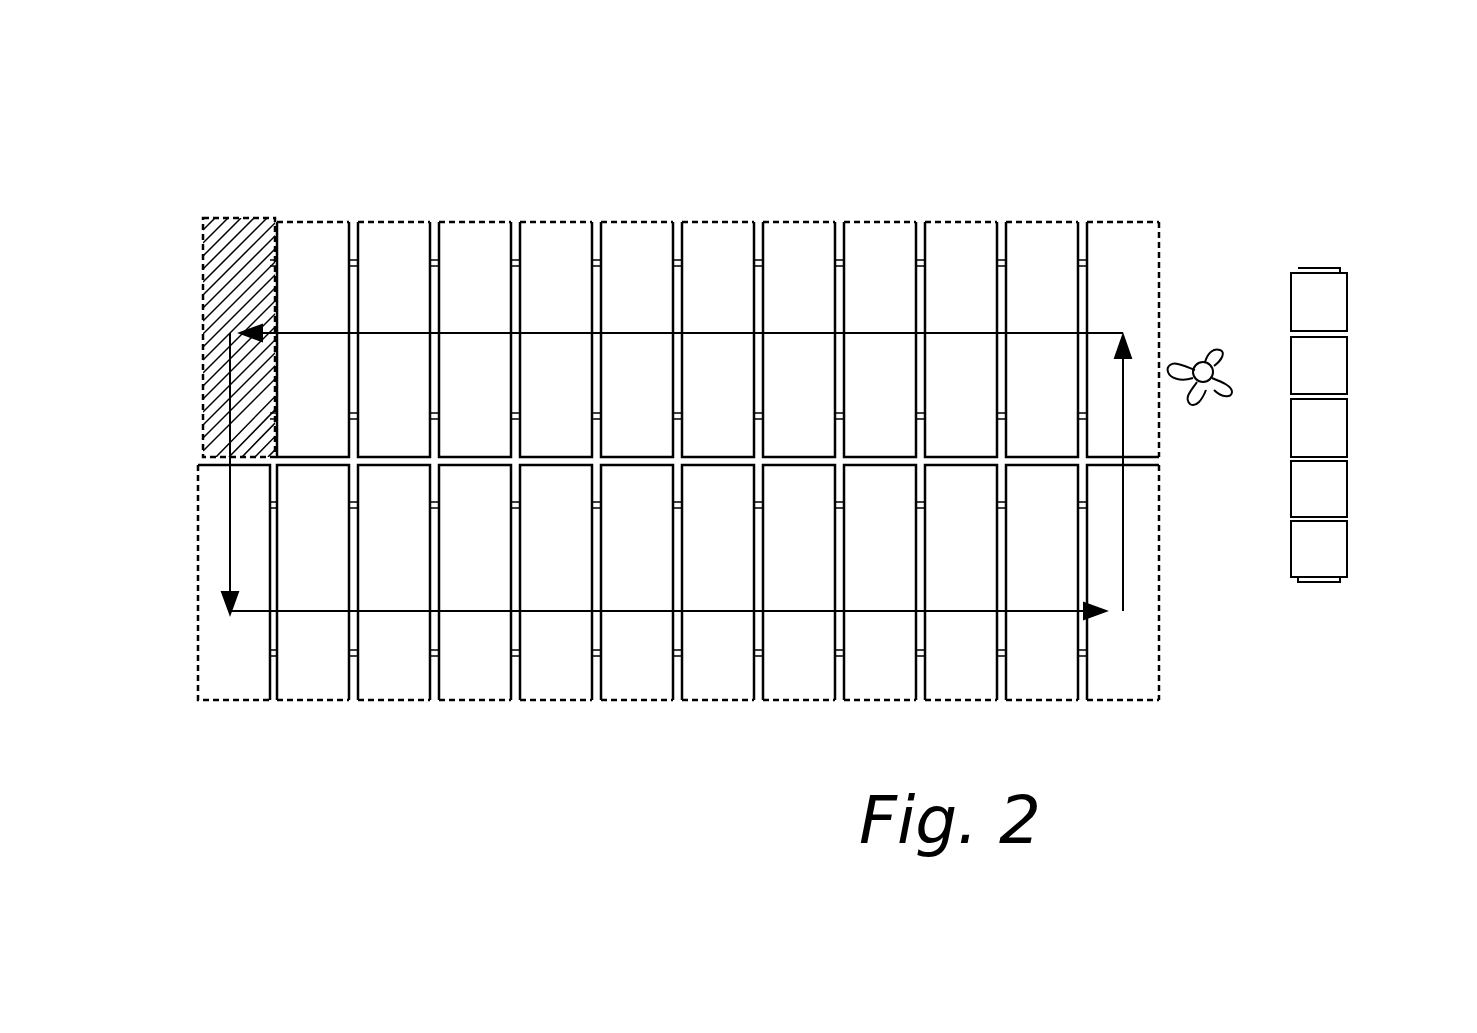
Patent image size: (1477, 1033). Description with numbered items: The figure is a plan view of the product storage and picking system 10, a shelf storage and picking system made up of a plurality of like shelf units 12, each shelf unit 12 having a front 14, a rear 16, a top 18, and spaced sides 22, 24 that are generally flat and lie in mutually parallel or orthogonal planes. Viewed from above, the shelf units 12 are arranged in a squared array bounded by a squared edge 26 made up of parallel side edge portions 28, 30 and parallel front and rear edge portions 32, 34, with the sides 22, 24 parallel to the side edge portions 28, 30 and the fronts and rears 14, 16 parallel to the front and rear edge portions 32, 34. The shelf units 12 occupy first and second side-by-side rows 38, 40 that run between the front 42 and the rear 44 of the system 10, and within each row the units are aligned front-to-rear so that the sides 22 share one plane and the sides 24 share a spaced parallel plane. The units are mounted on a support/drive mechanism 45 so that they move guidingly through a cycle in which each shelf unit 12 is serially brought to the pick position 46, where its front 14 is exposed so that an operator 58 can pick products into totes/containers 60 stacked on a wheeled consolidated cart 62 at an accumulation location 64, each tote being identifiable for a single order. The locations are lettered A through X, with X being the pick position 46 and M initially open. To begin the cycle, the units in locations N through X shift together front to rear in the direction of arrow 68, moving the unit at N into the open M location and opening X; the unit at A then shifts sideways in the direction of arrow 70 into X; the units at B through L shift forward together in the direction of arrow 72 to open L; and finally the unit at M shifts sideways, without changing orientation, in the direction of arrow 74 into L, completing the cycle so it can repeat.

The product storage and picking system 10 is at (1238, 160).
The shelf unit 12 is at (1153, 695).
The front 14 is at (350, 518).
The rear 16 is at (240, 560).
The top 18 is at (620, 238).
The side 22 is at (632, 222).
The side 24 is at (633, 458).
The squared edge 26 is at (197, 625).
The side edge portion 28 is at (583, 220).
The side edge portion 30 is at (580, 702).
The front edge portion 32 is at (1163, 262).
The rear edge portion 34 is at (203, 358).
The first row 38 is at (790, 660).
The second row 40 is at (892, 292).
The front of the system 42 is at (1166, 580).
The rear of the system 44 is at (193, 505).
The support/drive mechanism 45 is at (233, 250).
The pick position 46 is at (1166, 328).
The operator 58 is at (1222, 372).
The tote/container 60 is at (1341, 575).
The wheeled consolidated cart 62 is at (1320, 585).
The accumulation location 64 is at (1370, 400).
The arrow 68 is at (797, 335).
The arrow 70 is at (1120, 492).
The arrow 72 is at (715, 622).
The arrow 74 is at (230, 485).